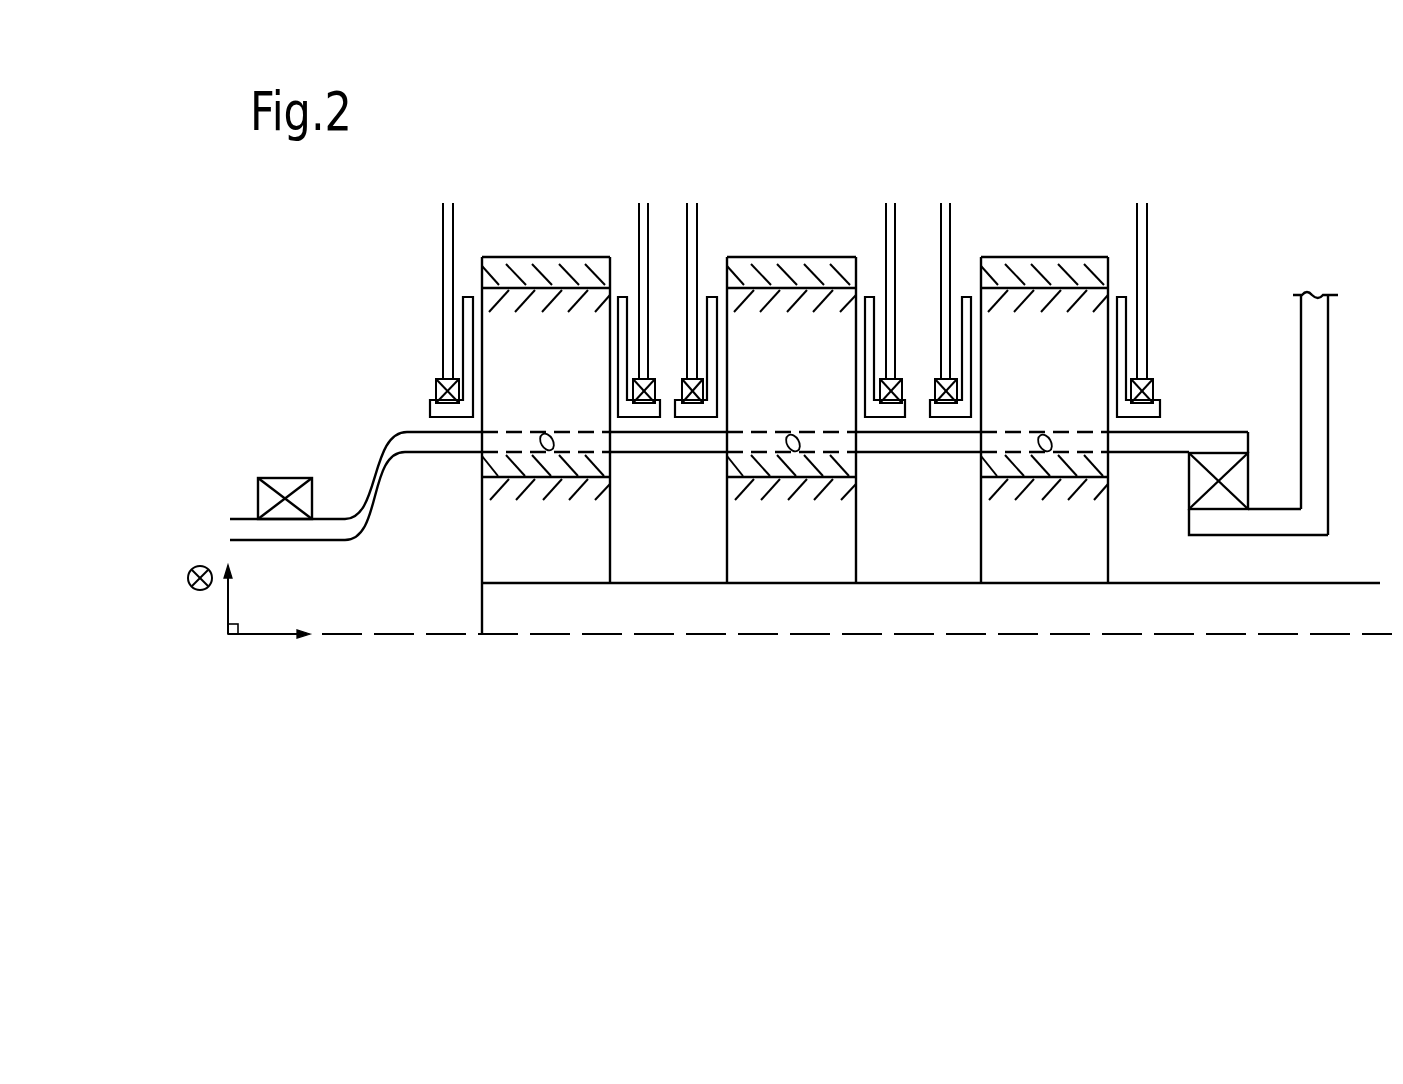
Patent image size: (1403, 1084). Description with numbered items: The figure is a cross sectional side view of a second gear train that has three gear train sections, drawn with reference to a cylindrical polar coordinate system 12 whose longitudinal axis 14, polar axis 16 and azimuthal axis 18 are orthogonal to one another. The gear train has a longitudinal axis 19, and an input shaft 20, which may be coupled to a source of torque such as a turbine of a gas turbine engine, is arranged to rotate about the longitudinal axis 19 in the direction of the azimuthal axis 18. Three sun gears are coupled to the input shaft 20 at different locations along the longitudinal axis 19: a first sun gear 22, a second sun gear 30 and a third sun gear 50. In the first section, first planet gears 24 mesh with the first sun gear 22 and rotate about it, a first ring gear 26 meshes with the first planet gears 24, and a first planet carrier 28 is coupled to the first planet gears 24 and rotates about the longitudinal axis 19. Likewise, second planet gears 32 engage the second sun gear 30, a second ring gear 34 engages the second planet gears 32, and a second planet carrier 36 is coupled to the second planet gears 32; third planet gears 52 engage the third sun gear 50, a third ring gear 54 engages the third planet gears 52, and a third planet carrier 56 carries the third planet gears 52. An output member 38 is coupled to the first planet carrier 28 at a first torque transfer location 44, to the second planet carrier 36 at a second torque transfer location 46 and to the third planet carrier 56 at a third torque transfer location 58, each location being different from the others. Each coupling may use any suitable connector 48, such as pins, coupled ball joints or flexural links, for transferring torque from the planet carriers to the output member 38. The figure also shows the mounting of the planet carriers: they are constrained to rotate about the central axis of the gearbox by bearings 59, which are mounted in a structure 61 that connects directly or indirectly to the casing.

The cylindrical polar coordinate system 12 is at (239, 700).
The longitudinal axis 14 is at (250, 636).
The polar axis 16 is at (230, 605).
The azimuthal axis 18 is at (200, 563).
The longitudinal axis 19 is at (1020, 636).
The input shaft 20 is at (1323, 605).
The first sun gear 22 is at (1061, 556).
The first planet gears 24 is at (1061, 366).
The first ring gear 26 is at (1101, 257).
The first planet carrier 28 is at (967, 292).
The second sun gear 30 is at (802, 556).
The second planet gears 32 is at (802, 366).
The second ring gear 34 is at (845, 257).
The second planet carrier 36 is at (713, 290).
The output member 38 is at (365, 488).
The first torque transfer location 44 is at (1023, 685).
The second torque transfer location 46 is at (786, 660).
The connector 48 is at (545, 432).
The third sun gear 50 is at (560, 556).
The third planet gears 52 is at (560, 369).
The third ring gear 54 is at (553, 257).
The third planet carrier 56 is at (468, 297).
The third torque transfer location 58 is at (548, 650).
The bearings 59 is at (436, 392).
The structure 61 is at (443, 224).